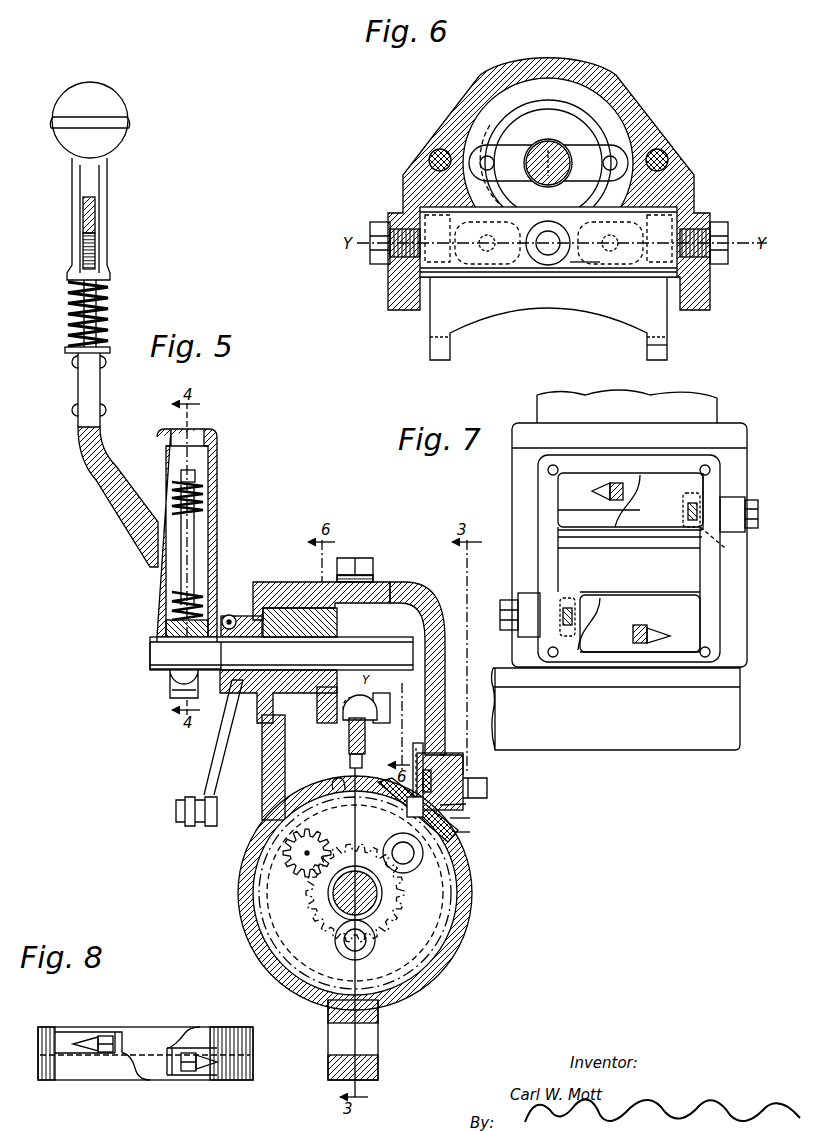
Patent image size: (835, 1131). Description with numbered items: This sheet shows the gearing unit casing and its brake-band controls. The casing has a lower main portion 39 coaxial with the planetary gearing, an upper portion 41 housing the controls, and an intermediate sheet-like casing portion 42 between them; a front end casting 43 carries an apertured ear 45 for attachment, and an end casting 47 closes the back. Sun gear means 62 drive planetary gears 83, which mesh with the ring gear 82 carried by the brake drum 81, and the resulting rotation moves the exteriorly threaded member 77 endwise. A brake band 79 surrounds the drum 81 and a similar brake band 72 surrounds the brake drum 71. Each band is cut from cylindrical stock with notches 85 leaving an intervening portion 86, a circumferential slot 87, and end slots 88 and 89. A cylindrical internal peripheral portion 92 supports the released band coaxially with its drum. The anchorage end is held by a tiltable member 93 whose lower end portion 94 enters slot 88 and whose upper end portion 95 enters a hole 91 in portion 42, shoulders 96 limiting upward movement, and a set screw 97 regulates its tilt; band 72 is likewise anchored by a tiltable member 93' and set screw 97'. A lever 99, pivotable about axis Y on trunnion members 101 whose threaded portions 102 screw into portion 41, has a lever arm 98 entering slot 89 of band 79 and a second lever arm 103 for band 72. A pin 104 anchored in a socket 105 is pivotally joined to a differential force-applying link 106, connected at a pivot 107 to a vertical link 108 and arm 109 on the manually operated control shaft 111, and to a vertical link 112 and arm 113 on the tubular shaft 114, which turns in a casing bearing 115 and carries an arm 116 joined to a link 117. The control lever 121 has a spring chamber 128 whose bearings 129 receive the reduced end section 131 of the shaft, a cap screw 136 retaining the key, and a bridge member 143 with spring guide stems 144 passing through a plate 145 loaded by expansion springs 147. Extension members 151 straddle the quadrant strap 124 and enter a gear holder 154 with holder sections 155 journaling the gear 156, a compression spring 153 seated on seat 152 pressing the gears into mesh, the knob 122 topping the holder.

In FIG. 5, the lower main casing portion 39 is at (236, 862).
In FIG. 5, the upper casing portion 41 is at (411, 618).
In FIG. 6, the upper casing portion 41 is at (686, 132).
In FIG. 5, the intermediate sheet-like casing portion 42 is at (268, 751).
In FIG. 7, the intermediate sheet-like casing portion 42 is at (545, 497).
In FIG. 7, the front end casting 43 is at (710, 413).
In FIG. 5, the apertured ear 45 is at (380, 1065).
In FIG. 7, the end casting 47 is at (703, 750).
In FIG. 5, the sun gear teeth 62 is at (385, 887).
In FIG. 7, the brake drum 71 is at (613, 648).
In FIG. 7, the brake band 72 is at (680, 655).
In FIG. 5, the exteriorly threaded member 77 is at (337, 900).
In FIG. 5, the brake band 79 is at (462, 858).
In FIG. 7, the brake band 79 is at (632, 470).
In FIG. 8, the brake band 79 is at (188, 1027).
In FIG. 5, the brake drum 81 is at (471, 832).
In FIG. 7, the brake drum 81 is at (645, 483).
In FIG. 5, the ring gear 82 is at (312, 840).
In FIG. 5, the planetary gears 83 is at (398, 840).
In FIG. 8, the notches 85 is at (130, 1030).
In FIG. 8, the intervening portion 86 is at (147, 1040).
In FIG. 8, the slot 87 is at (193, 1035).
In FIG. 5, the slot 88 is at (471, 818).
In FIG. 8, the slot 88 is at (190, 1077).
In FIG. 5, the slot 89 is at (333, 790).
In FIG. 7, the slot 89 is at (660, 640).
In FIG. 8, the slot 89 is at (98, 1034).
In FIG. 7, the hole 91 is at (688, 513).
In FIG. 5, the cylindrical internal peripheral portion 92 is at (456, 880).
In FIG. 5, the tiltable member 93 is at (468, 766).
In FIG. 7, the tiltable member 93 is at (721, 499).
In FIG. 7, the tiltable member 93' is at (580, 600).
In FIG. 5, the lower end portion 94 is at (468, 804).
In FIG. 5, the upper end portion 95 is at (418, 748).
In FIG. 7, the upper end portion 95 is at (745, 492).
In FIG. 5, the shoulders 96 is at (428, 735).
In FIG. 7, the shoulders 96 is at (690, 496).
In FIG. 5, the set screw 97 is at (491, 788).
In FIG. 7, the set screw 97 is at (761, 523).
In FIG. 7, the set screw 97' is at (510, 623).
In FIG. 5, the lever arm 98 is at (350, 760).
In FIG. 6, the lever arm 98 is at (662, 350).
In FIG. 7, the lever arm 98 is at (617, 487).
In FIG. 5, the lever 99 is at (363, 724).
In FIG. 6, the lever 99 is at (548, 253).
In FIG. 6, the trunnion members 101 is at (402, 197).
In FIG. 6, the threaded portions 102 is at (392, 213).
In FIG. 6, the lever arm 103 is at (431, 350).
In FIG. 7, the lever arm 103 is at (642, 644).
In FIG. 5, the pin 104 is at (320, 715).
In FIG. 6, the pin 104 is at (553, 270).
In FIG. 5, the socket 105 is at (392, 702).
In FIG. 6, the socket 105 is at (547, 257).
In FIG. 5, the differential force-applying link 106 is at (343, 707).
In FIG. 6, the differential force-applying link 106 is at (588, 264).
In FIG. 6, the pivotal connection 107 is at (615, 258).
In FIG. 6, the vertical link 108 is at (614, 198).
In FIG. 6, the arm 109 is at (601, 133).
In FIG. 5, the manually operated control shaft 111 is at (281, 653).
In FIG. 6, the manually operated control shaft 111 is at (548, 163).
In FIG. 6, the vertical link 112 is at (484, 196).
In FIG. 6, the arm 113 is at (497, 148).
In FIG. 5, the tubular shaft 114 is at (300, 627).
In FIG. 6, the tubular shaft 114 is at (552, 132).
In FIG. 5, the casing bearing 115 is at (287, 578).
In FIG. 5, the arm 116 is at (206, 762).
In FIG. 5, the link 117 is at (208, 826).
In FIG. 5, the control lever 121 is at (120, 499).
In FIG. 5, the knob 122 is at (97, 97).
In FIG. 5, the quadrant strap 124 is at (88, 213).
In FIG. 5, the spring chamber 128 is at (217, 467).
In FIG. 5, the bearings 129 is at (162, 629).
In FIG. 5, the reduced end section 131 is at (156, 659).
In FIG. 5, the cap screw 136 is at (172, 694).
In FIG. 5, the bridge member 143 is at (165, 620).
In FIG. 5, the spring guide stems 144 is at (184, 560).
In FIG. 5, the plate 145 is at (205, 489).
In FIG. 5, the expansion springs 147 is at (203, 519).
In FIG. 5, the strap-like extension members 151 is at (107, 303).
In FIG. 5, the seat 152 is at (80, 353).
In FIG. 5, the compression spring 153 is at (73, 333).
In FIG. 5, the gear holder 154 is at (100, 176).
In FIG. 5, the holder sections 155 is at (80, 228).
In FIG. 5, the gear 156 is at (85, 262).